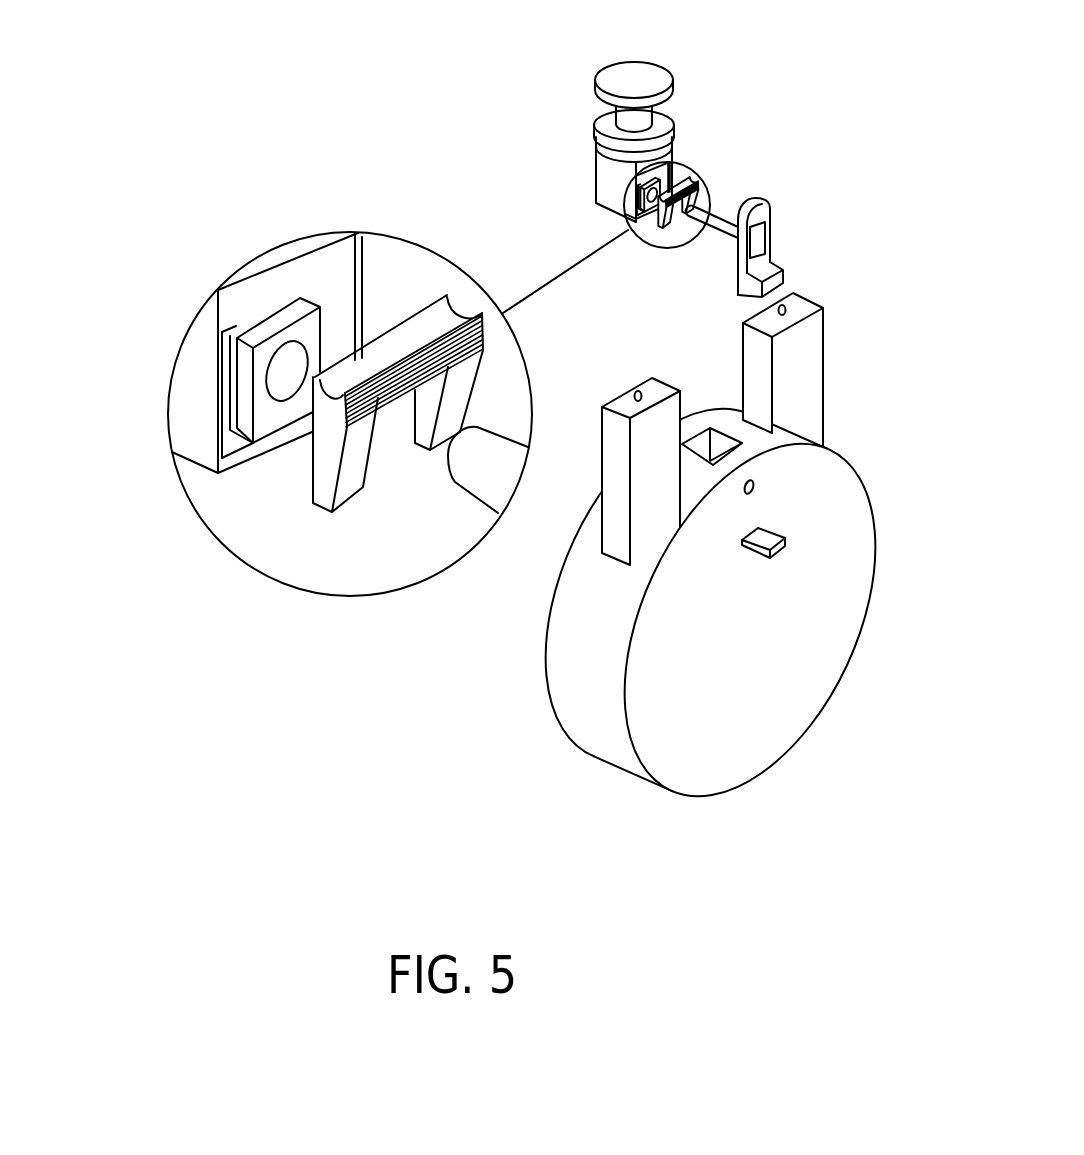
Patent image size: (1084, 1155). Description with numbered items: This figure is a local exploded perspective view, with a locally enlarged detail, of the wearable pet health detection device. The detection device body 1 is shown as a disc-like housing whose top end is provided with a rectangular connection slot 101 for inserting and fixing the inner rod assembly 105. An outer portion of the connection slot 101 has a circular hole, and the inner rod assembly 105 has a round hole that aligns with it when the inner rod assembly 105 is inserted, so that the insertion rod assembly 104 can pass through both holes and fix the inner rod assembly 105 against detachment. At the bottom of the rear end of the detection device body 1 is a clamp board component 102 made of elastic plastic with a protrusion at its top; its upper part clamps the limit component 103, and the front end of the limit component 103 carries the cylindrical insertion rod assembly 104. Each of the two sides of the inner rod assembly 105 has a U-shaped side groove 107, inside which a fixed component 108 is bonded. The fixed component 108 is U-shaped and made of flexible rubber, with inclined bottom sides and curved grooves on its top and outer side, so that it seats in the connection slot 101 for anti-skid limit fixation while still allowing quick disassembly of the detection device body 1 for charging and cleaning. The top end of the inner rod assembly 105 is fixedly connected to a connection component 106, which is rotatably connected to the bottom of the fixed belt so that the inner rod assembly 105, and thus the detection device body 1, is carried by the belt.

The detection device body 1 is at (833, 570).
The connection slot 101 is at (722, 441).
The clamp board component 102 is at (785, 539).
The limit component 103 is at (782, 273).
The insertion rod assembly 104 is at (467, 463).
The inner rod assembly 105 is at (248, 287).
The connection component 106 is at (636, 95).
The side groove 107 is at (248, 388).
The fixed component 108 is at (340, 467).